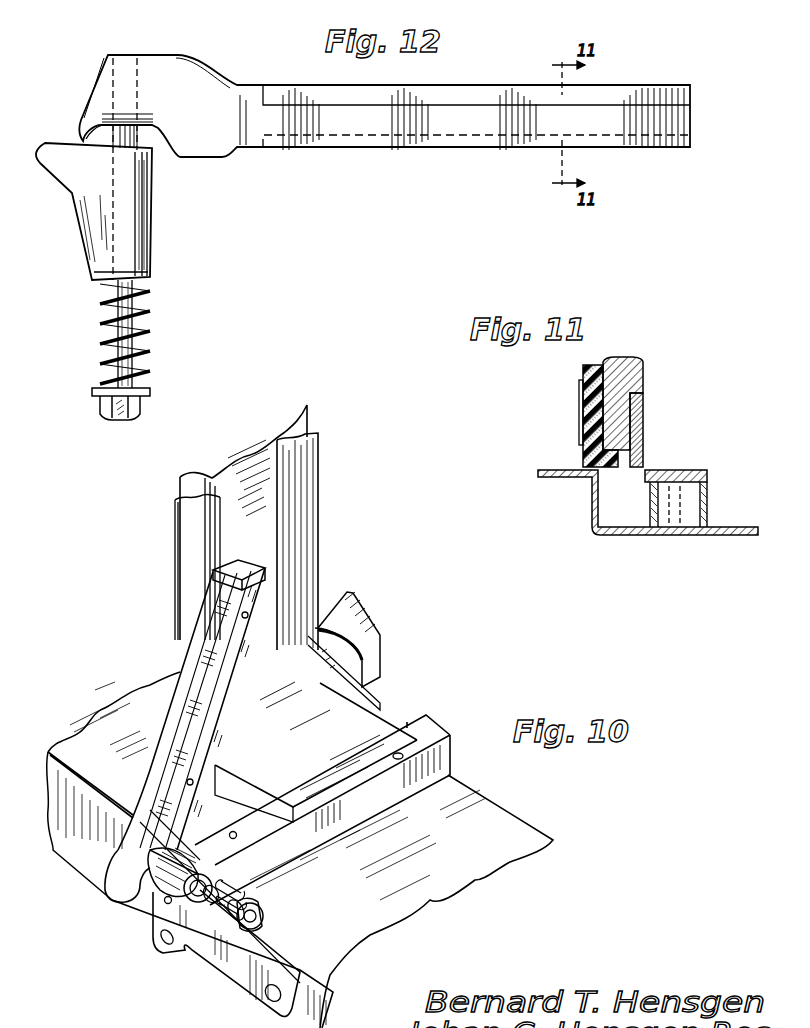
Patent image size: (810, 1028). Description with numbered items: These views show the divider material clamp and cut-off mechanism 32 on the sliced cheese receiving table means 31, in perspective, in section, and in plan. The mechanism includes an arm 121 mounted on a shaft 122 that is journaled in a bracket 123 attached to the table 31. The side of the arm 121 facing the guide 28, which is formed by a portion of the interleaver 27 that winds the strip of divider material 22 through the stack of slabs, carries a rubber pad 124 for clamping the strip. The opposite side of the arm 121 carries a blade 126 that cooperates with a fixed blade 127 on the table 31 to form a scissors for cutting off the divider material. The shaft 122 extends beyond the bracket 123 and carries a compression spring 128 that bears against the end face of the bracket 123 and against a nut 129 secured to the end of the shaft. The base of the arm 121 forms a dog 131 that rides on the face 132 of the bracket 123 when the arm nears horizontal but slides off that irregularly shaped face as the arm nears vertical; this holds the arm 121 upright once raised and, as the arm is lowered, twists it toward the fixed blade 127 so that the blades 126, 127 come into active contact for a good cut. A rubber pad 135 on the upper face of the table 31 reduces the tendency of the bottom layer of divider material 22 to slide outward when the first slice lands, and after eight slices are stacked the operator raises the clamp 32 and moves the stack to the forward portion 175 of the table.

In FIG. 10, the divider material 22 is at (280, 432).
In FIG. 10, the interleaver 27 is at (320, 573).
In FIG. 10, the guide 28 is at (297, 497).
In FIG. 10, the table means 31 is at (133, 933).
In FIG. 12, the divider material clamp and cut-off mechanism 32 is at (480, 148).
In FIG. 11, the divider material clamp and cut-off mechanism 32 is at (650, 381).
In FIG. 10, the divider material clamp and cut-off mechanism 32 is at (192, 630).
In FIG. 12, the arm 121 is at (333, 120).
In FIG. 11, the arm 121 is at (620, 368).
In FIG. 10, the arm 121 is at (180, 726).
In FIG. 12, the shaft 122 is at (150, 133).
In FIG. 10, the shaft 122 is at (263, 921).
In FIG. 10, the bracket 123 is at (243, 960).
In FIG. 11, the rubber pad 124 is at (595, 420).
In FIG. 10, the rubber pad 124 is at (250, 562).
In FIG. 11, the blade 126 is at (645, 438).
In FIG. 10, the blade 126 is at (223, 700).
In FIG. 11, the fixed blade 127 is at (690, 475).
In FIG. 10, the fixed blade 127 is at (428, 736).
In FIG. 12, the compression spring 128 is at (158, 316).
In FIG. 10, the compression spring 128 is at (240, 893).
In FIG. 12, the nut 129 is at (147, 402).
In FIG. 10, the nut 129 is at (252, 928).
In FIG. 12, the dog 131 is at (76, 137).
In FIG. 10, the dog 131 is at (125, 900).
In FIG. 12, the face 132 is at (60, 146).
In FIG. 10, the rubber pad 135 is at (222, 770).
In FIG. 10, the forward portion 175 is at (500, 835).